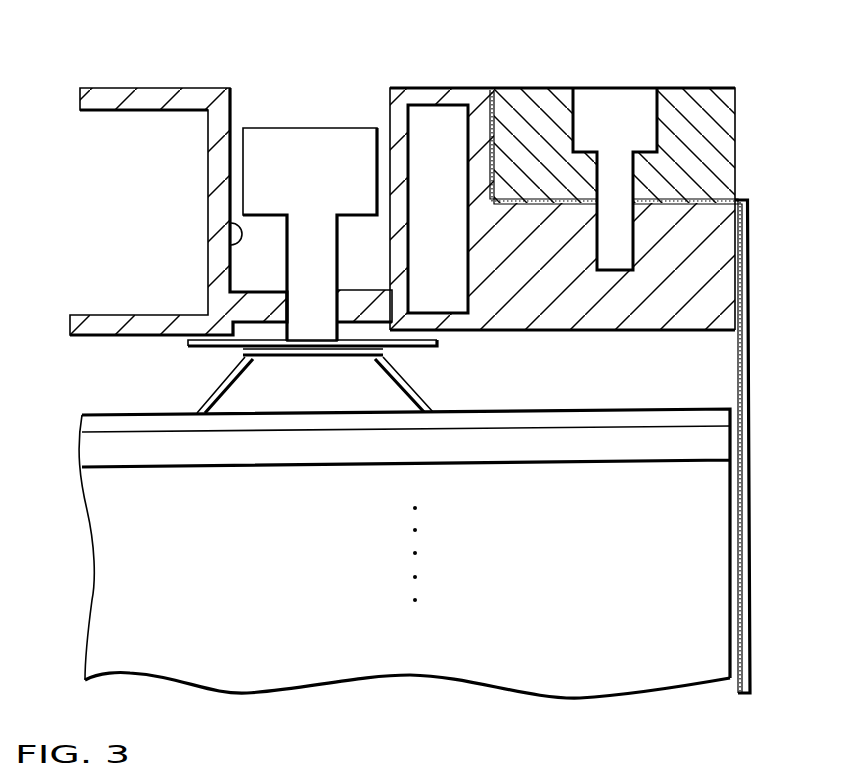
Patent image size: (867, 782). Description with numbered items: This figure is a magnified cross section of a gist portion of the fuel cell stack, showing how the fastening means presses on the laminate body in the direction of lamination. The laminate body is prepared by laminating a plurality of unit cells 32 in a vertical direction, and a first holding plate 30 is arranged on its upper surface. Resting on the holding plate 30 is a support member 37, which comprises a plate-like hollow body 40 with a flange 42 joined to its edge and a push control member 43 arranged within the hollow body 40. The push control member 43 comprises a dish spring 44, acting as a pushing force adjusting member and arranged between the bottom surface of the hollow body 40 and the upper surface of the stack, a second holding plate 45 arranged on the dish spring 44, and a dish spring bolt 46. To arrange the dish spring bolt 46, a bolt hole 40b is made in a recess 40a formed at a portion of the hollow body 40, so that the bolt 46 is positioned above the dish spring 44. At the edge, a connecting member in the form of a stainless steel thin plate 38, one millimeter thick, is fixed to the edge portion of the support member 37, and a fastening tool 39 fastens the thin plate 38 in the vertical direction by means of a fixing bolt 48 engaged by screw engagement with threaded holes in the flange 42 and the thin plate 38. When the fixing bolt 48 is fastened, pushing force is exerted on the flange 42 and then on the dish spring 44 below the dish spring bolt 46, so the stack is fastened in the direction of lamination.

The first holding plate 30 is at (102, 425).
The unit cell 32 is at (155, 448).
The support member 37 is at (240, 72).
The connecting member (thin plate) 38 is at (744, 577).
The fastening tool 39 is at (720, 66).
The plate-like hollow body 40 is at (136, 95).
The recess 40a is at (233, 233).
The bolt hole 40b is at (290, 299).
The flange 42 is at (732, 303).
The push control member 43 is at (505, 340).
The dish spring 44 is at (430, 393).
The second holding plate 45 is at (433, 343).
The dish spring bolt 46 is at (318, 262).
The fixing bolt 48 is at (605, 95).